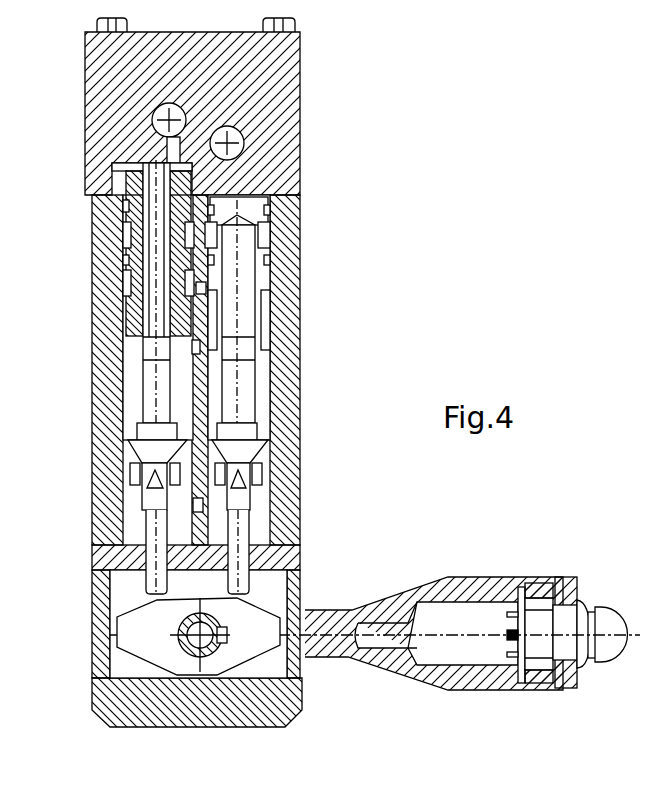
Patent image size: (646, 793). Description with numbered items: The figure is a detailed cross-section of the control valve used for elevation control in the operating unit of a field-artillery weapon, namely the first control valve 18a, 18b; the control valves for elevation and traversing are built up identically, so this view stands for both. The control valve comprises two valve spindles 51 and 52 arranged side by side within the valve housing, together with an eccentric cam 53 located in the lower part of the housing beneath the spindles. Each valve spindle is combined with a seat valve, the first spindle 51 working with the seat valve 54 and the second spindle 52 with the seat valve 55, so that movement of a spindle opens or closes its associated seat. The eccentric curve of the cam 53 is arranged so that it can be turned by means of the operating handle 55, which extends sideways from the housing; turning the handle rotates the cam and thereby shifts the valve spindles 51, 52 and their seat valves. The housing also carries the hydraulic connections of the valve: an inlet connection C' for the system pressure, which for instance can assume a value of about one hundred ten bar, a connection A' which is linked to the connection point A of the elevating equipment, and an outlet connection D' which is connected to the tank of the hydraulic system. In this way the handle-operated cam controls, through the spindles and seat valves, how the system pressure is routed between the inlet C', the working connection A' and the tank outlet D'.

The first control valve 18a is at (268, 293).
The first control valve 18b is at (120, 365).
The valve spindle 51 is at (240, 370).
The valve spindle 52 is at (148, 400).
The eccentric cam 53 is at (233, 647).
The seat valve 54 is at (247, 457).
The seat valve / operating handle 55 is at (140, 457).
The connection A' is at (272, 494).
The inlet connection C' is at (272, 325).
The outlet connection D' is at (274, 252).